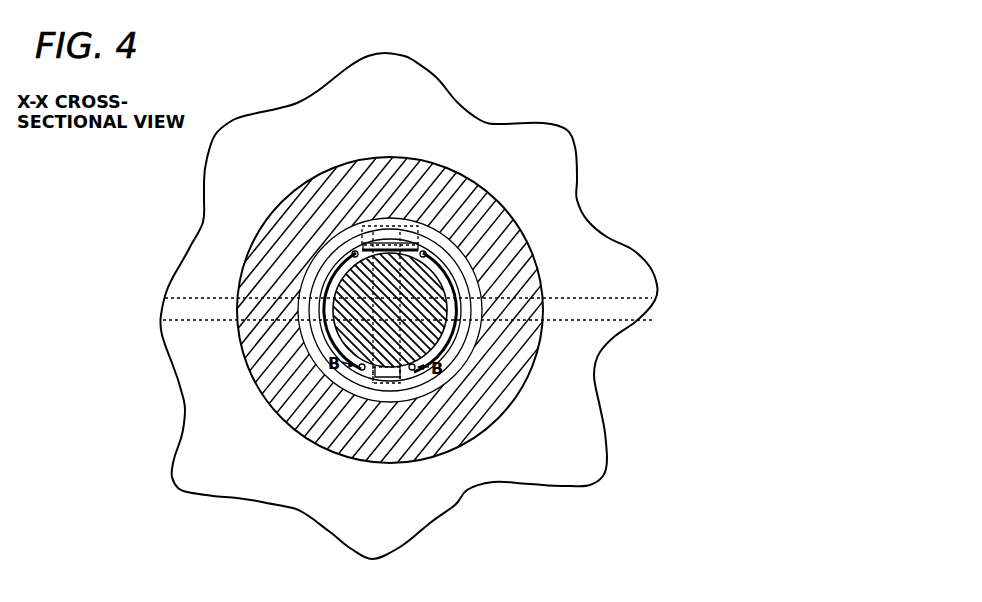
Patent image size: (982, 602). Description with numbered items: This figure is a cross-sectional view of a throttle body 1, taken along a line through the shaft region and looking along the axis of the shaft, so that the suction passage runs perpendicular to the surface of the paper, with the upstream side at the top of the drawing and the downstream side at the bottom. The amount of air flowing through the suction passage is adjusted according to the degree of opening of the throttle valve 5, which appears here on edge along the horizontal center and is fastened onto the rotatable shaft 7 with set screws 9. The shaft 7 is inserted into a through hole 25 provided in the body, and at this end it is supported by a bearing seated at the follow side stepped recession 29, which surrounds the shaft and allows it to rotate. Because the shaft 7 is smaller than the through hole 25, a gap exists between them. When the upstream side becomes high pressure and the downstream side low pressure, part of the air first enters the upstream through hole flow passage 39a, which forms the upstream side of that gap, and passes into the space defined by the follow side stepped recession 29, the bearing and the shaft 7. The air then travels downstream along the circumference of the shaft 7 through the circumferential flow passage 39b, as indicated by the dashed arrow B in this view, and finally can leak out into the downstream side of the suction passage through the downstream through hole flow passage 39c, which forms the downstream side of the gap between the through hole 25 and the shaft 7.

The throttle body 1 is at (575, 252).
The throttle valve 5 is at (195, 298).
The shaft 7 is at (330, 337).
The set screws 9 is at (380, 225).
The through hole 25 is at (445, 348).
The follow side stepped recession 29 is at (465, 342).
The upstream through hole flow passage 39a is at (355, 250).
The circumferential flow passage 39b is at (487, 224).
The downstream through hole flow passage 39c is at (360, 368).